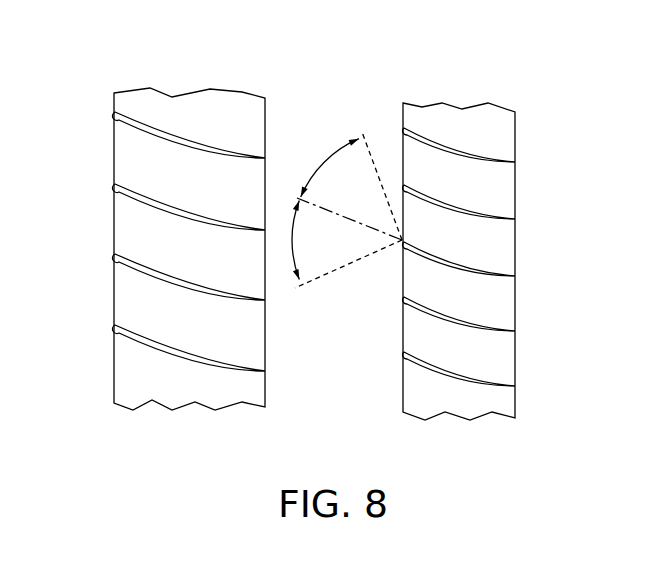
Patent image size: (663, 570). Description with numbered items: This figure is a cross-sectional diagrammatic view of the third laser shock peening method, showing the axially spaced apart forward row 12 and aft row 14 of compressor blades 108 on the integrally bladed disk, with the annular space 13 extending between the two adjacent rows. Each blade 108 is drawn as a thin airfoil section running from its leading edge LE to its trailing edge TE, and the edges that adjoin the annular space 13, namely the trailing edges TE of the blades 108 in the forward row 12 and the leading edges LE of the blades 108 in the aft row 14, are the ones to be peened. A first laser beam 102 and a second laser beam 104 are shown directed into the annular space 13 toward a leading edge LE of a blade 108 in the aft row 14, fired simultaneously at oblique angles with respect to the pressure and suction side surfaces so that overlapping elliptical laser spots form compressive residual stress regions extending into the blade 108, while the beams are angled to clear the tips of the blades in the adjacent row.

The forward row 12 is at (193, 217).
The annular space 13 is at (305, 105).
The aft row 14 is at (463, 229).
The first laser beam 102 is at (370, 147).
The second laser beam 104 is at (362, 262).
The compressor blade 108 is at (140, 348).
The leading edge LE is at (115, 258).
The trailing edge TE is at (266, 302).